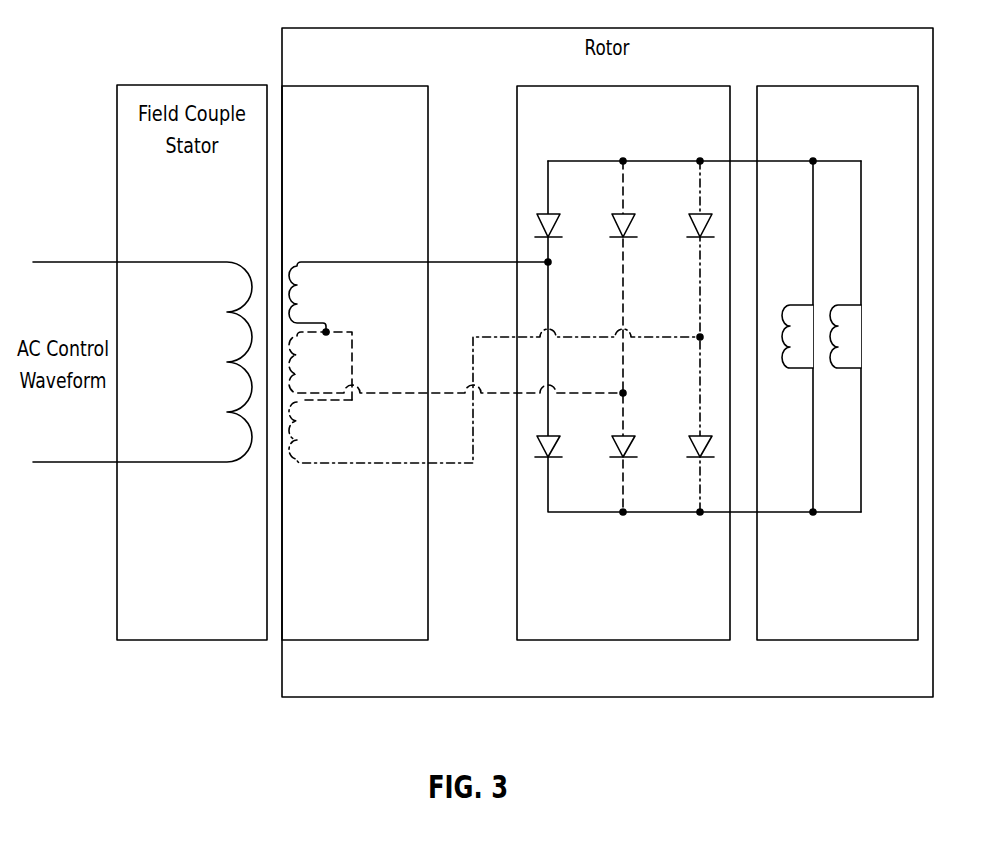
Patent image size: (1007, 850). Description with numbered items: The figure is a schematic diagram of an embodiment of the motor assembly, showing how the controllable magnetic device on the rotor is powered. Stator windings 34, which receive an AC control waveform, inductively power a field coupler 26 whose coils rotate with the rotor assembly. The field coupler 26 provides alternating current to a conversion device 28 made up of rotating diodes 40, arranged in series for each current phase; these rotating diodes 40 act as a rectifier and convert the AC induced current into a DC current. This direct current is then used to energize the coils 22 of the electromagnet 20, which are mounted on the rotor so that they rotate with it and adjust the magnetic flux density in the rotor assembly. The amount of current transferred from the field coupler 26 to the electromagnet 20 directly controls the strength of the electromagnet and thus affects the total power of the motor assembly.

The electromagnet 20 is at (872, 86).
The windings 22 is at (832, 343).
The field coupler 26 is at (383, 86).
The conversion device 28 is at (683, 86).
The stator windings 34 is at (229, 259).
The rotating diodes 40 is at (552, 237).